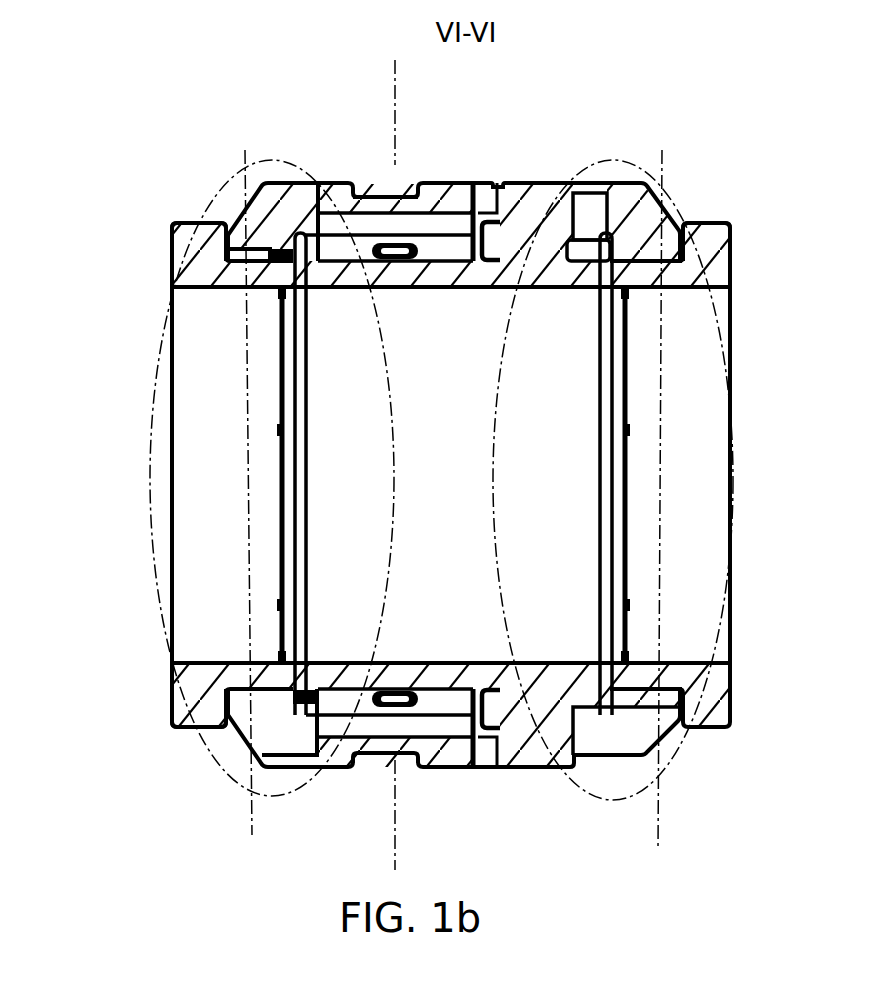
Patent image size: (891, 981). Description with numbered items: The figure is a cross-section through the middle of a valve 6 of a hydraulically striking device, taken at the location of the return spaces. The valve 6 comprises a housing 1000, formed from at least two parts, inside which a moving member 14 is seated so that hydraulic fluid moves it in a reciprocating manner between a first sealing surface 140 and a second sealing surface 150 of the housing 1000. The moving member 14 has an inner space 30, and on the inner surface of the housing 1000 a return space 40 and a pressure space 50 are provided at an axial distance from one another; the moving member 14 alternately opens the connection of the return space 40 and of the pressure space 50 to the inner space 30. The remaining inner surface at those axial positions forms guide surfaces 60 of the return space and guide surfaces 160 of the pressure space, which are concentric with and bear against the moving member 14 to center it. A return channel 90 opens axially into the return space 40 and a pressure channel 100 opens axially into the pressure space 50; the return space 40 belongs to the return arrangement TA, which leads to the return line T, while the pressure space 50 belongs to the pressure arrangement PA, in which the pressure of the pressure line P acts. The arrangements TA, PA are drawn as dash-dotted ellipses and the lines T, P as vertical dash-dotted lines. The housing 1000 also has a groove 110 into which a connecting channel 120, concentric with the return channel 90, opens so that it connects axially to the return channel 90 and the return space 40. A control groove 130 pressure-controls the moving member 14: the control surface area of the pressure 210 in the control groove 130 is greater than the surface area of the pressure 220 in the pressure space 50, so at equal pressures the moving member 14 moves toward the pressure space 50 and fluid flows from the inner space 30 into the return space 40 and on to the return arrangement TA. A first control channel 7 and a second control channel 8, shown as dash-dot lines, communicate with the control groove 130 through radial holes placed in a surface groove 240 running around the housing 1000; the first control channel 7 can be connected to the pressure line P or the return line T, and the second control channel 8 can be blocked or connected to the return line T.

The valve 6 is at (100, 703).
The first control channel 7 is at (395, 840).
The second control channel 8 is at (395, 82).
The moving member 14 is at (492, 292).
The inner space 30 is at (452, 432).
The return space 40 is at (300, 183).
The pressure space 50 is at (594, 232).
The guide surfaces of the return space 60 is at (312, 288).
The return channel 90 is at (245, 250).
The pressure channel 100 is at (660, 250).
The groove 110 is at (490, 238).
The connecting channel 120 is at (410, 213).
The control groove 130 is at (388, 246).
The first sealing surface 140 is at (313, 682).
The second sealing surface 150 is at (585, 676).
The guide surfaces of the pressure space 160 is at (584, 290).
The control surface area of the pressure 210 is at (318, 200).
The surface area of the pressure 220 is at (602, 226).
The surface groove 240 is at (400, 183).
The housing 1000 is at (548, 772).
The return line T is at (251, 822).
The pressure line P is at (660, 840).
The return arrangement TA is at (152, 352).
The pressure arrangement PA is at (722, 342).